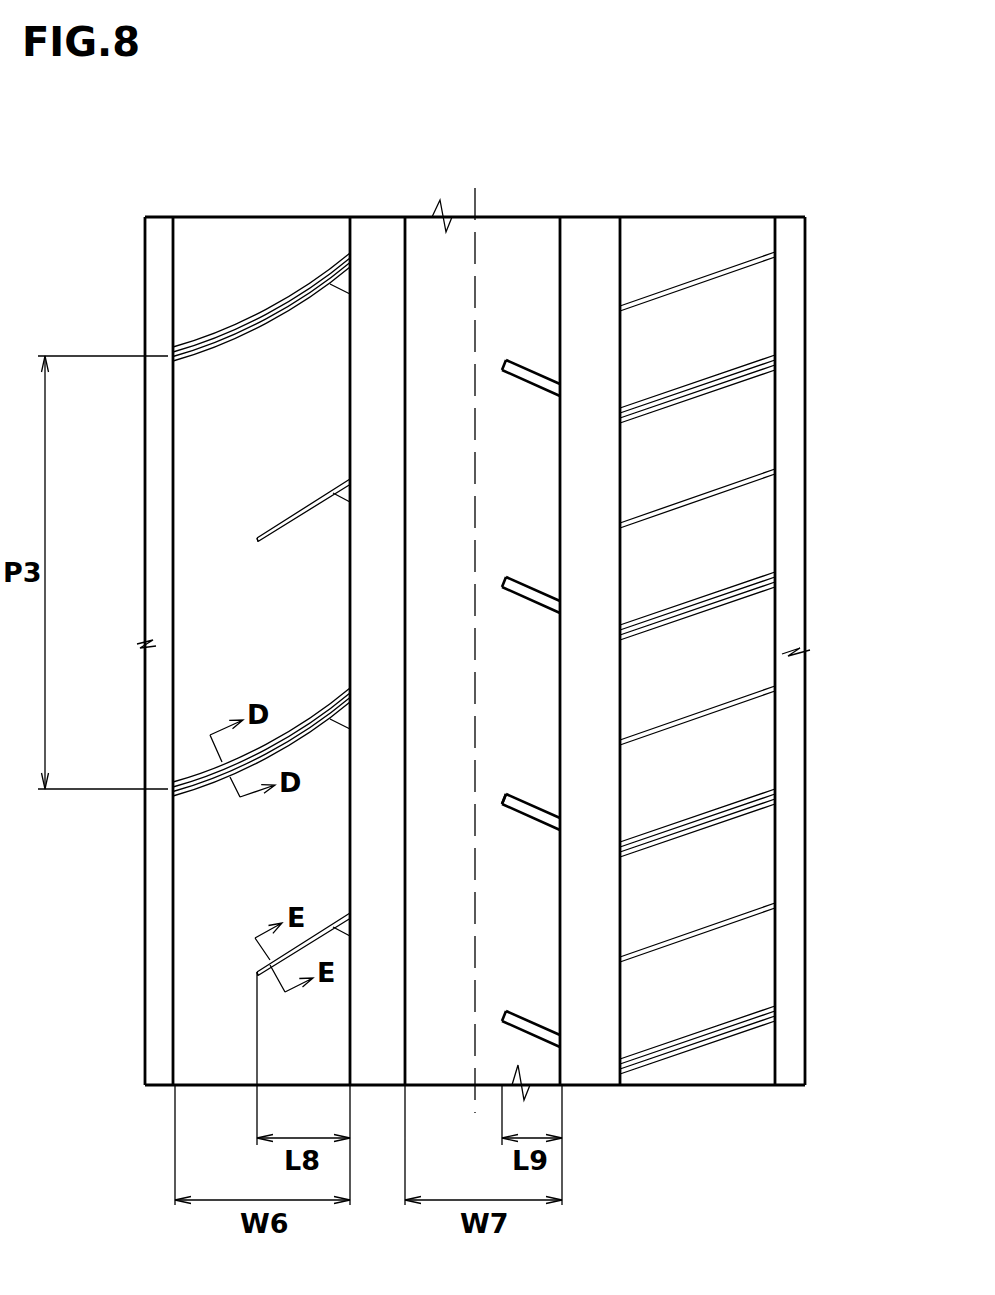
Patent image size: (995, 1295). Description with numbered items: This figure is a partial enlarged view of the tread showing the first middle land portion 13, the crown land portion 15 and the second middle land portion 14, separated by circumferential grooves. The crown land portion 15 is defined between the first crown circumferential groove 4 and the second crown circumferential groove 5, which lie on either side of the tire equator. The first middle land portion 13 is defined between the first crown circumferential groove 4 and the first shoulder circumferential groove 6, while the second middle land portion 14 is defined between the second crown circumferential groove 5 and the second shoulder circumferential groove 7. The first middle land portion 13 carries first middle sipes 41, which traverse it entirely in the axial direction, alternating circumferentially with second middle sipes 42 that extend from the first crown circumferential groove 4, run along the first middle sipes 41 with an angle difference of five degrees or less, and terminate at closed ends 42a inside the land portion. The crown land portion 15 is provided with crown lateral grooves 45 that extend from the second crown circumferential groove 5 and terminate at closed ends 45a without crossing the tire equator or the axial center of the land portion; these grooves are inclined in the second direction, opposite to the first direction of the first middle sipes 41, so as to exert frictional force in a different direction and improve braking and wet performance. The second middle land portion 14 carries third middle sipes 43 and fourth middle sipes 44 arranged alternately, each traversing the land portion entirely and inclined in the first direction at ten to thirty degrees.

The first crown circumferential groove 4 is at (377, 258).
The second crown circumferential groove 5 is at (591, 258).
The first shoulder circumferential groove 6 is at (160, 258).
The second shoulder circumferential groove 7 is at (790, 258).
The first middle land portion 13 is at (251, 258).
The second middle land portion 14 is at (678, 258).
The crown land portion 15 is at (520, 258).
The first middle sipes 41 is at (233, 337).
The second middle sipes 42 is at (288, 517).
The closed ends 42a is at (257, 538).
The third middle sipes 43 is at (713, 383).
The fourth middle sipes 44 is at (712, 493).
The crown lateral grooves 45 is at (525, 373).
The closed ends 45a is at (503, 796).